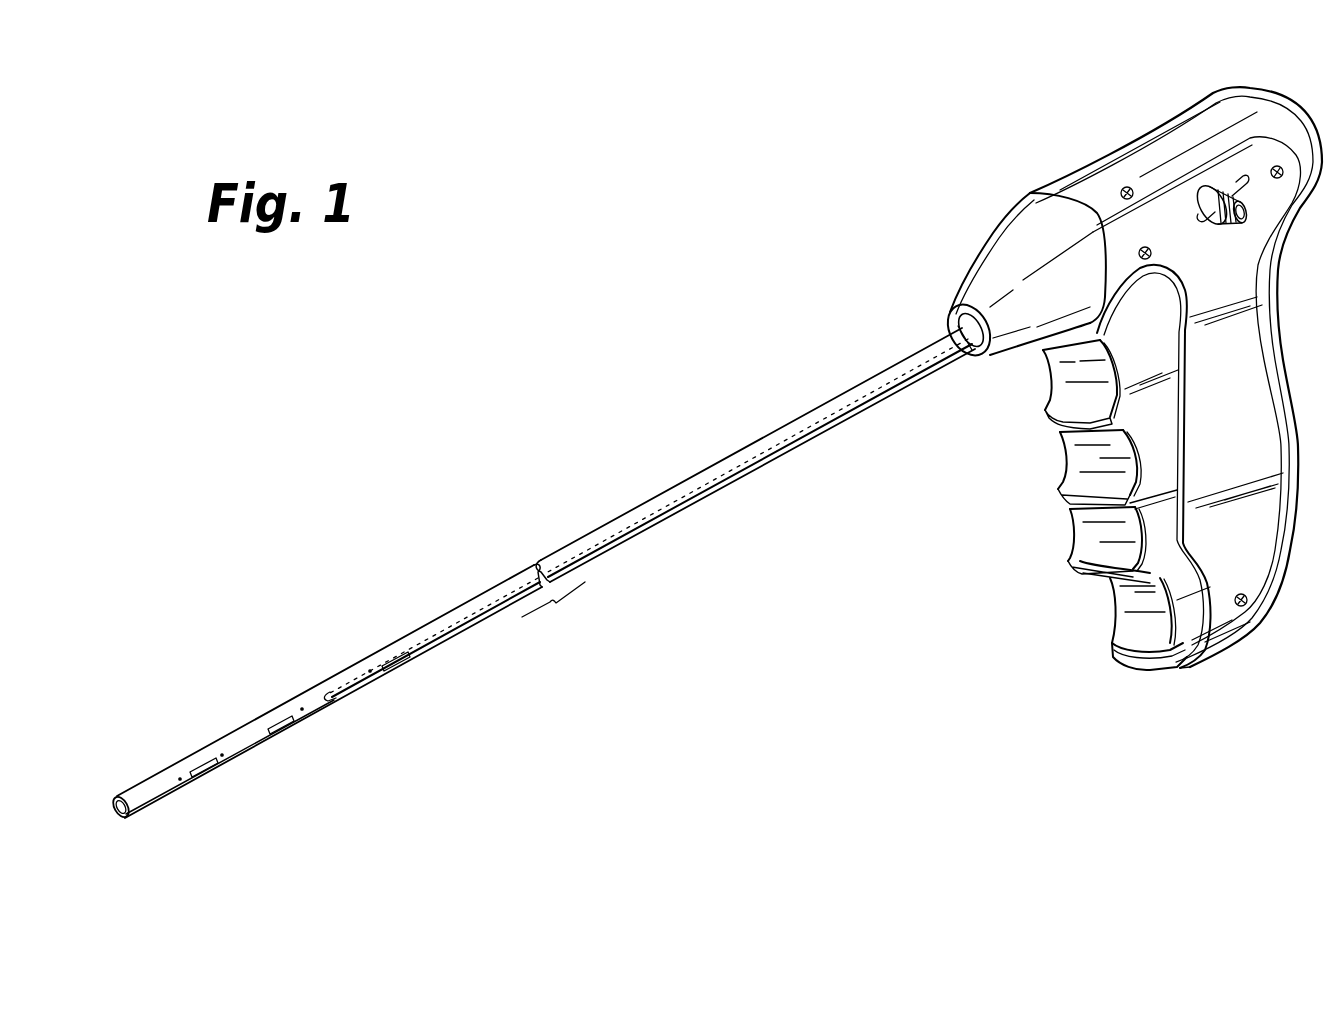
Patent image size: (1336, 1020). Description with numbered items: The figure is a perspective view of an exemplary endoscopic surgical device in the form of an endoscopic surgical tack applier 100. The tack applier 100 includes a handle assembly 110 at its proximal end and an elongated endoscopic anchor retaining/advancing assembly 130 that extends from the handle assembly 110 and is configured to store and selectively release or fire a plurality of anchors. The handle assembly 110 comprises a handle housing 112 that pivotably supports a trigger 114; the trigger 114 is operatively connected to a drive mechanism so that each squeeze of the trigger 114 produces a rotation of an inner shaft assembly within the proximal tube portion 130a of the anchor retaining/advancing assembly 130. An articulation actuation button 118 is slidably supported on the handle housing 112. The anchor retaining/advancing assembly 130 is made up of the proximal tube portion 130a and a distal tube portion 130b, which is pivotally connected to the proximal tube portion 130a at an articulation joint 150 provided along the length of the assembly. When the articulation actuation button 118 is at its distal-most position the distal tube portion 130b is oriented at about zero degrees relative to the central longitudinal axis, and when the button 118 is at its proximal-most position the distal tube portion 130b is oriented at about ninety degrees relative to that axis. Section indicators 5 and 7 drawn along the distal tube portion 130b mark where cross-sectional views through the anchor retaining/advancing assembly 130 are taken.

The endoscopic surgical tack applier 100 is at (517, 441).
The handle assembly 110 is at (1022, 185).
The handle housing 112 is at (1133, 147).
The trigger 114 is at (1092, 557).
The articulation actuation button 118 is at (1220, 232).
The endoscopic anchor retaining/advancing assembly 130 is at (628, 546).
The proximal tube portion 130a is at (898, 363).
The distal tube portion 130b is at (120, 795).
The articulation joint 150 is at (312, 688).
The section line 5- 5 is at (404, 660).
The section line 7- 7 is at (222, 766).